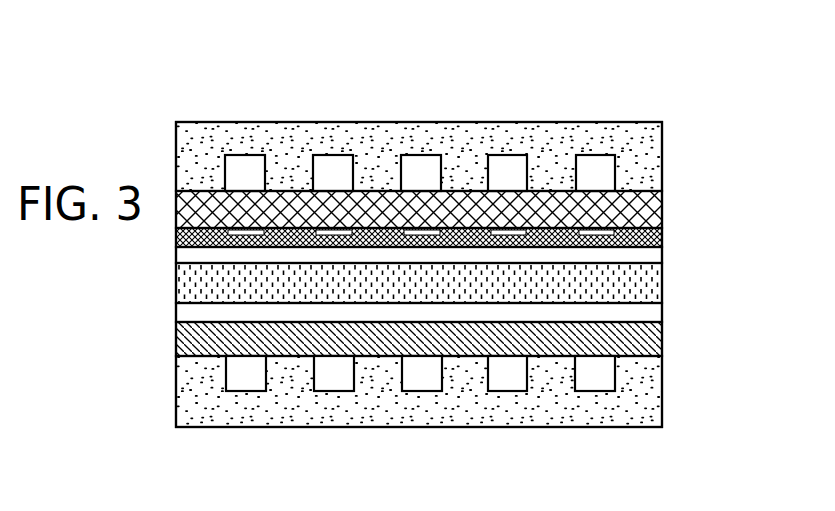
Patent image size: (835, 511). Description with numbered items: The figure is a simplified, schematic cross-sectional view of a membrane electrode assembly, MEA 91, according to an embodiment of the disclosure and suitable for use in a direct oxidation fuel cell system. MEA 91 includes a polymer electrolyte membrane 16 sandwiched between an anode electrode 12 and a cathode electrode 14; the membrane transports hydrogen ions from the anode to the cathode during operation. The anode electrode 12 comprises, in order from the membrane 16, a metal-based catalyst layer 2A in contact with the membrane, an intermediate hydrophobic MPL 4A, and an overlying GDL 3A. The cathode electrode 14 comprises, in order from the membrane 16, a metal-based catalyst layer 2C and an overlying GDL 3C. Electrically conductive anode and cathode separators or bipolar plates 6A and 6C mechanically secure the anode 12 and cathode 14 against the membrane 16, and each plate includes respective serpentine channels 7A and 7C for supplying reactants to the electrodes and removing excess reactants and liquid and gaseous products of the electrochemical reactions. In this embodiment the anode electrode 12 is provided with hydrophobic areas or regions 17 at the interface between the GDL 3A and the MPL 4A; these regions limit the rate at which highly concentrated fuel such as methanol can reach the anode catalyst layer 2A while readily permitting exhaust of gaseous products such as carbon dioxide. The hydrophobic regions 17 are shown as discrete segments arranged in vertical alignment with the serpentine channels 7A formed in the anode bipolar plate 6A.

The MEA 91 is at (416, 104).
The anode electrode 12 is at (763, 65).
The cathode electrode 14 is at (772, 337).
The anode separator 6A is at (668, 118).
The serpentine channels 7A is at (593, 162).
The GDL 3A is at (668, 212).
The MPL 4A is at (668, 237).
The hydrophobic areas or regions 17 is at (606, 229).
The metal-based catalyst layer 2A is at (668, 255).
The polymer electrolyte membrane 16 is at (668, 290).
The metal-based catalyst layer 2C is at (668, 312).
The GDL 3C is at (668, 345).
The cathode separator 6C is at (668, 397).
The serpentine channels 7C is at (508, 378).